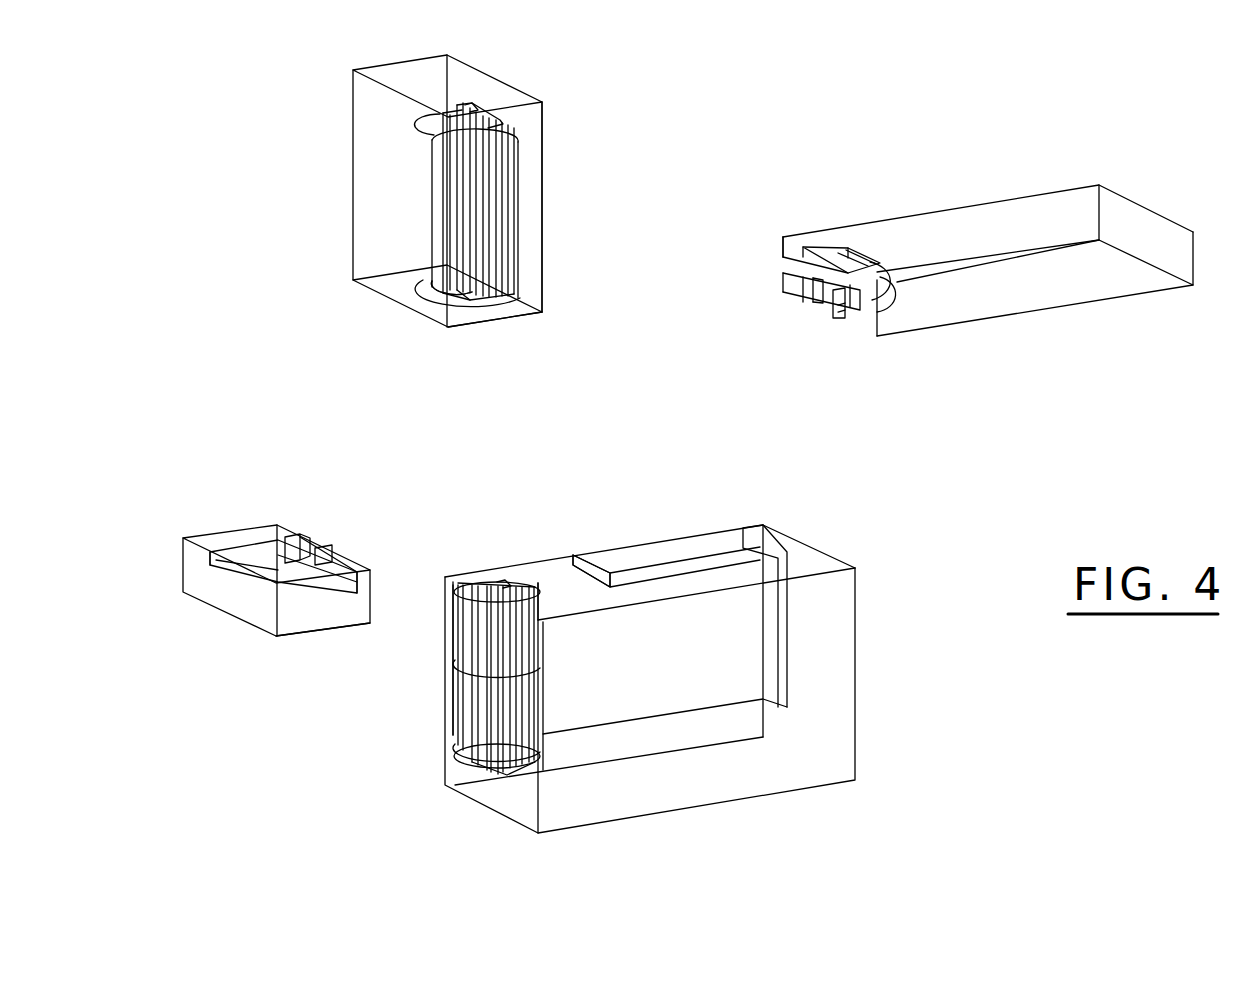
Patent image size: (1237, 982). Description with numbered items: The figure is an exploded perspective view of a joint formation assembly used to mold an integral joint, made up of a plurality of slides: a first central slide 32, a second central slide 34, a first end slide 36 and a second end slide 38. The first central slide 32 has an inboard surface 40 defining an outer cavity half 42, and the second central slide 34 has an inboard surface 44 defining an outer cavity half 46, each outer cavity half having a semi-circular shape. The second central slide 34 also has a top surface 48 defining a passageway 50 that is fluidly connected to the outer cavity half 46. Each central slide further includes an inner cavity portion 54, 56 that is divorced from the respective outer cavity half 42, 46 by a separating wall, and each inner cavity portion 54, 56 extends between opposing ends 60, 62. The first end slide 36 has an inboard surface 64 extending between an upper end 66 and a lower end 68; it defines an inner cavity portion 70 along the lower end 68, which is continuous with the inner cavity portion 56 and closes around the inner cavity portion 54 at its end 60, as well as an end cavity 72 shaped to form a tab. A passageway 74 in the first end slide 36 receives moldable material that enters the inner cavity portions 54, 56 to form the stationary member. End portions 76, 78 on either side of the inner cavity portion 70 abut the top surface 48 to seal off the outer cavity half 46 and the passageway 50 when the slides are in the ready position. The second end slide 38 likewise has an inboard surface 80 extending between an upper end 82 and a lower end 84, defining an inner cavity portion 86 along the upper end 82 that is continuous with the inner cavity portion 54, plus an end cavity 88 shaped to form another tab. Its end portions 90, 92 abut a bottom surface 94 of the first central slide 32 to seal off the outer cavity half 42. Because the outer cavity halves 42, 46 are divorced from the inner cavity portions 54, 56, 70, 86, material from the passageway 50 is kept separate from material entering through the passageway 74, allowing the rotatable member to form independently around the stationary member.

The first central slide 32 is at (372, 238).
The second central slide 34 is at (783, 793).
The first end slide 36 is at (1113, 218).
The second end slide 38 is at (253, 610).
The inboard surface 40 is at (528, 86).
The outer cavity half 42 is at (427, 130).
The inboard surface 44 is at (452, 753).
The outer cavity half 46 is at (530, 580).
The top surface 48 is at (803, 558).
The passageway 50 is at (583, 585).
The inner cavity portion 54 is at (485, 175).
The inner cavity portion 56 is at (443, 607).
The end 60 is at (477, 108).
The end 62 is at (463, 287).
The inboard surface 64 is at (853, 320).
The upper end 66 is at (807, 240).
The lower end 68 is at (797, 303).
The inner cavity portion 70 is at (828, 307).
The end cavity 72 is at (863, 263).
The passageway 74 is at (783, 267).
The end portion 76 is at (783, 283).
The end portion 78 is at (863, 320).
The inboard surface 80 is at (302, 530).
The upper end 82 is at (357, 572).
The lower end 84 is at (357, 610).
The inner cavity portion 86 is at (313, 538).
The end cavity 88 is at (257, 545).
The end portion 90 is at (293, 533).
The end portion 92 is at (347, 568).
The bottom surface 94 is at (527, 315).